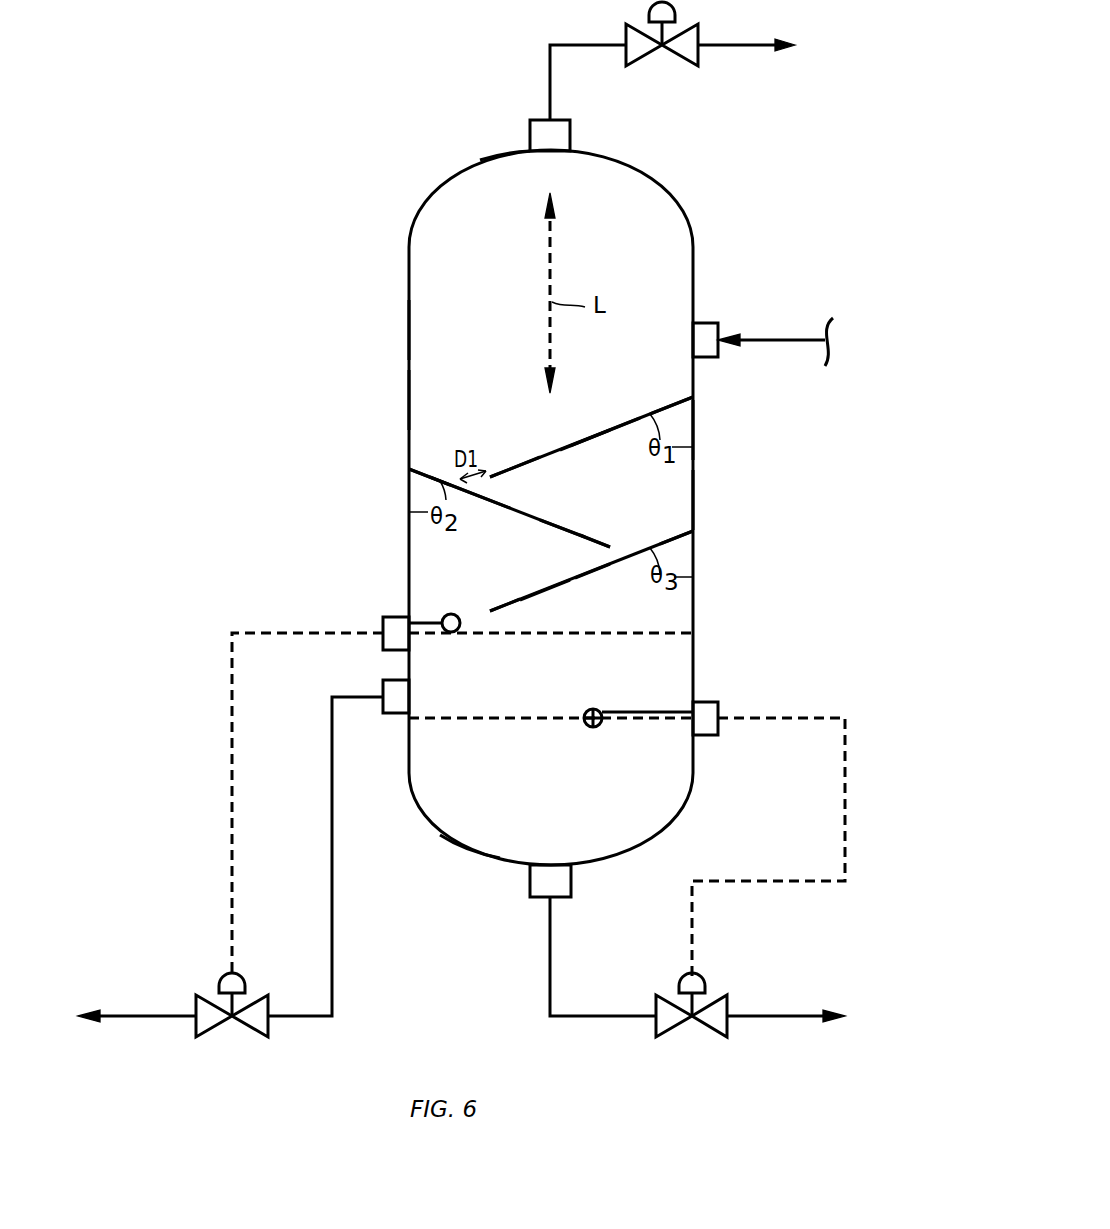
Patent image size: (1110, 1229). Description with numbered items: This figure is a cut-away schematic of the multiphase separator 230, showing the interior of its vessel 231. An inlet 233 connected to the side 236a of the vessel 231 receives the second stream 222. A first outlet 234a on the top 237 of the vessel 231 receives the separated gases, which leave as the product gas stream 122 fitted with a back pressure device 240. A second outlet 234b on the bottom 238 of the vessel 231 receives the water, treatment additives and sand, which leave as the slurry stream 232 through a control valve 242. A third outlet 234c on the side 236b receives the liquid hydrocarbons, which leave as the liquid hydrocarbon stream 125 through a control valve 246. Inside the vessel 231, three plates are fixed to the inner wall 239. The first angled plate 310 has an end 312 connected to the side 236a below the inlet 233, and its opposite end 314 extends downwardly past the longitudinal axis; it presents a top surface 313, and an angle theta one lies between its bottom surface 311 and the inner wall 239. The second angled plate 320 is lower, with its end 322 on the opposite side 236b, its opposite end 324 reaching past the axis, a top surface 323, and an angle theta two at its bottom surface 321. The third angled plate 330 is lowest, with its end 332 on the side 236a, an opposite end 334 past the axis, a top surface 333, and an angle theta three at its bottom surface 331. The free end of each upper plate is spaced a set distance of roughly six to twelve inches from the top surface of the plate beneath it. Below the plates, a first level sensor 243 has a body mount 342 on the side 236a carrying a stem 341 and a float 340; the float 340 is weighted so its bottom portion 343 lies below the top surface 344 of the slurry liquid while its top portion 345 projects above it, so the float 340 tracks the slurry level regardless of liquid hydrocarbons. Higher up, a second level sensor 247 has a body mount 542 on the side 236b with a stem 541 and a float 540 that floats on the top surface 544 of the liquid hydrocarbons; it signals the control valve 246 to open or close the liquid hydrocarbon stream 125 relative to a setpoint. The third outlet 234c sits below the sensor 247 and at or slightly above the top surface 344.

The product gas stream 122 is at (585, 45).
The back pressure device 240 is at (650, 57).
The top of the vessel 237 is at (495, 152).
The first outlet 234a is at (572, 130).
The multiphase separator 230 is at (345, 280).
The inner wall 239 is at (412, 327).
The inlet 233 is at (710, 323).
The second stream 222 is at (785, 340).
The side of the vessel 236b is at (409, 392).
The side of the vessel 236a is at (695, 422).
The vessel 231 is at (695, 495).
The first angled plate 310 is at (625, 424).
The bottom surface of the first angled plate 311 is at (612, 440).
The end of the first angled plate 312 is at (670, 406).
The upper surface of first baffle 313 is at (590, 437).
The opposite end of the first angled plate 314 is at (515, 468).
The second angled plate 320 is at (530, 515).
The bottom surface of the second angled plate 321 is at (490, 500).
The end of the second angled plate 322 is at (425, 474).
The top surface of the second angled plate 323 is at (560, 528).
The opposite end of the second angled plate 324 is at (596, 541).
The third angled plate 330 is at (565, 581).
The bottom surface of the third angled plate 331 is at (540, 592).
The end of the third angled plate 332 is at (680, 536).
The top surface of the third angled plate 333 is at (590, 571).
The opposite end of the third angled plate 334 is at (503, 606).
The body mount 542 is at (390, 617).
The float 540 is at (447, 614).
The stem 541 is at (432, 628).
The top surface of the liquid hydrocarbons 544 is at (575, 633).
The second level sensor 247 is at (200, 676).
The third outlet 234c is at (388, 680).
The first level sensor 243 is at (735, 688).
The top portion of the float 345 is at (585, 708).
The stem 341 is at (632, 712).
The top surface of the liquid in the slurry 344 is at (495, 718).
The bottom portion of the float 343 is at (580, 723).
The float 340 is at (605, 725).
The body mount 342 is at (708, 735).
The liquid hydrocarbon stream 125 is at (332, 832).
The bottom of the vessel 238 is at (458, 848).
The second outlet 234b is at (530, 882).
The control valve 246 is at (222, 1025).
The slurry stream 232 is at (550, 1018).
The control valve 242 is at (680, 1025).